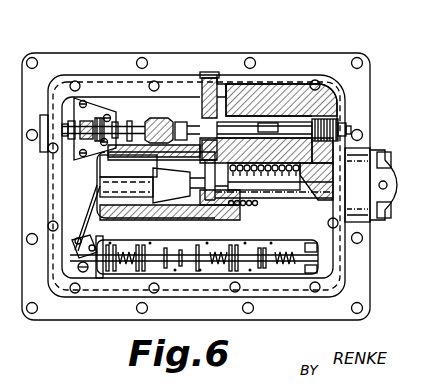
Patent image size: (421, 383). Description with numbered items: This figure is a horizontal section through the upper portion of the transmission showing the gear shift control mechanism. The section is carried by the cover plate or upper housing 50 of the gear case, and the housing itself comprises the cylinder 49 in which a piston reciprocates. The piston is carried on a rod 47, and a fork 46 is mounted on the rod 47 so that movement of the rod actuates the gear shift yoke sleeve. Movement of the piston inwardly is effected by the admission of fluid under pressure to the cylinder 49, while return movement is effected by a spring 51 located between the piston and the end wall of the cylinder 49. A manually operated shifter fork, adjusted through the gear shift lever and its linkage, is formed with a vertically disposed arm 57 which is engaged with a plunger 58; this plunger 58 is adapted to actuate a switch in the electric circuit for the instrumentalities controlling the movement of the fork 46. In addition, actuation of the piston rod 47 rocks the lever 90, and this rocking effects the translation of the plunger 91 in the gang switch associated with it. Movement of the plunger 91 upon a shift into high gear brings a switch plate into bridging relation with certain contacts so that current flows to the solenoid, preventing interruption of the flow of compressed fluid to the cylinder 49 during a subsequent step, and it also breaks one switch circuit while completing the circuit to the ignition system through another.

The cover plate or upper housing 50 is at (360, 100).
The vertically disposed arm 57 is at (258, 126).
The plunger 58 is at (197, 115).
The fork 46 is at (155, 167).
The rod 47 is at (156, 185).
The spring 51 is at (270, 200).
The cylinder 49 is at (262, 200).
The lever 90 is at (88, 191).
The plunger 91 is at (252, 260).